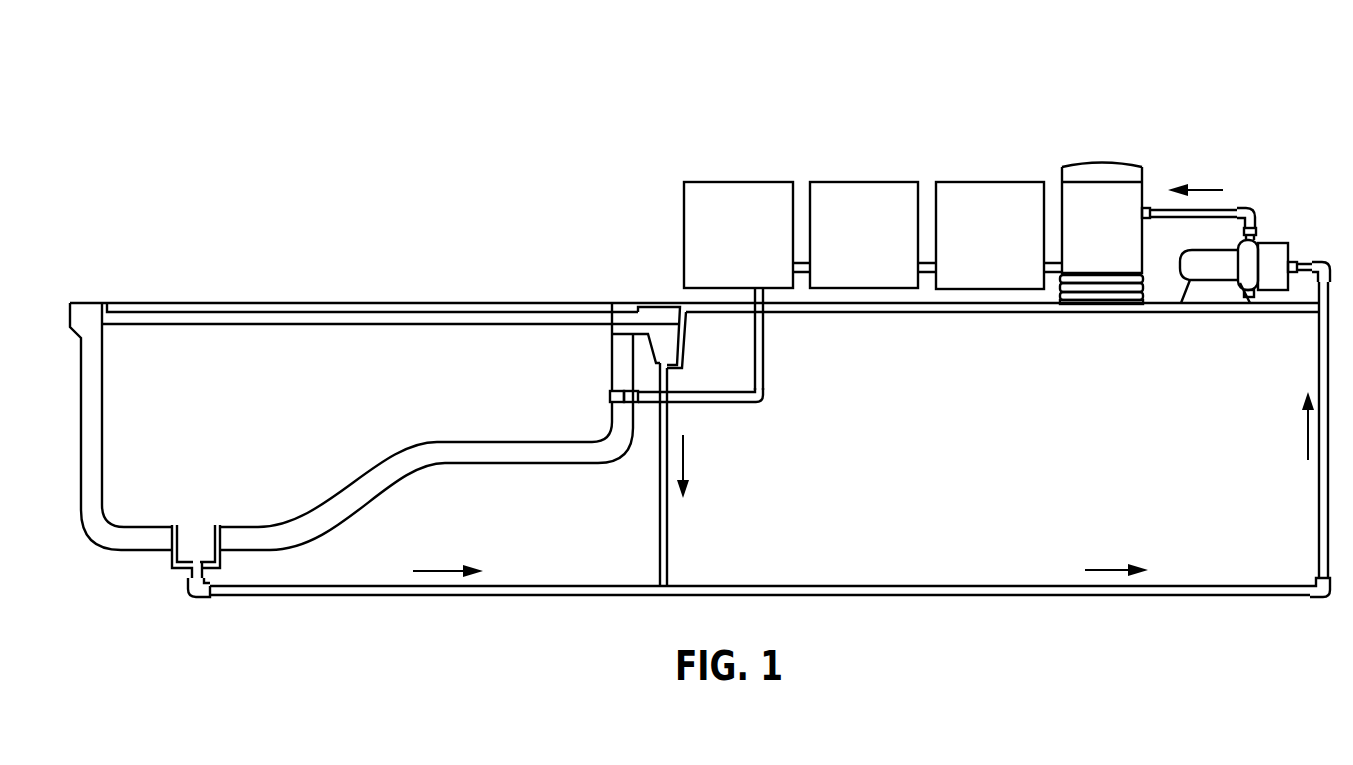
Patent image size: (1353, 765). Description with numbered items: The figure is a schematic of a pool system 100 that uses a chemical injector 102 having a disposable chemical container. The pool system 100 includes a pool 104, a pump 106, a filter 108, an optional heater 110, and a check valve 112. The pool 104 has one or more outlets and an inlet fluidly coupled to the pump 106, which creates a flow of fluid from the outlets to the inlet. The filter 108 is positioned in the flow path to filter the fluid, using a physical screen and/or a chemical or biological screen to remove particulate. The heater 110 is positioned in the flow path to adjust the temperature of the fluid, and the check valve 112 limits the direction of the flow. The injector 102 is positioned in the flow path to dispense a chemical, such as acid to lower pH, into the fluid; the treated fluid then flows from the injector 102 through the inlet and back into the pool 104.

The pool system 100 is at (322, 124).
The chemical injector 102 is at (738, 182).
The pool 104 is at (301, 335).
The pump 106 is at (1273, 243).
The filter 108 is at (1102, 162).
The heater 110 is at (990, 182).
The check valve 112 is at (863, 182).